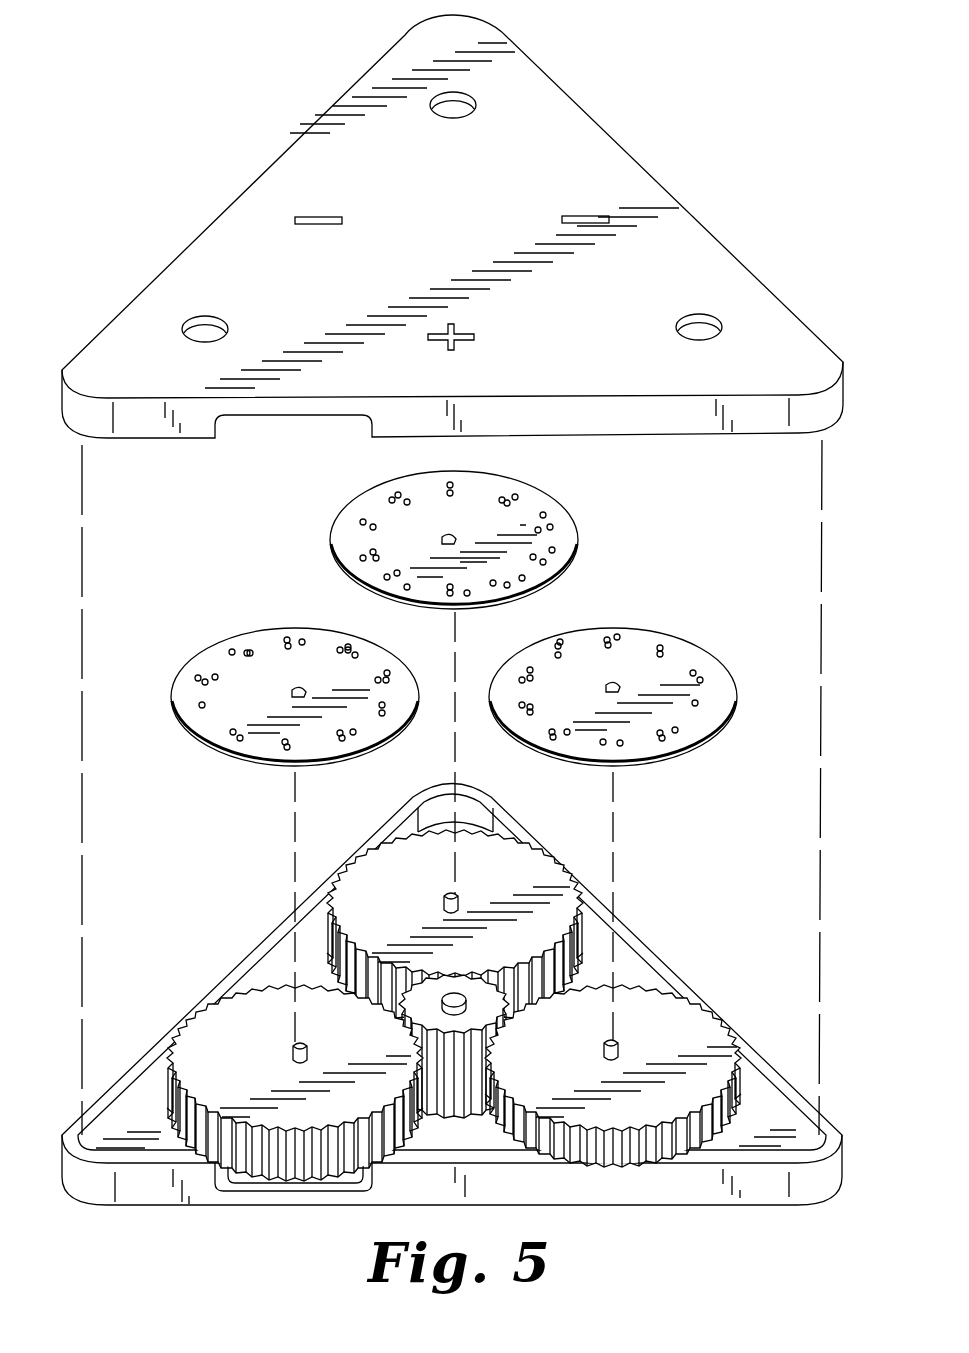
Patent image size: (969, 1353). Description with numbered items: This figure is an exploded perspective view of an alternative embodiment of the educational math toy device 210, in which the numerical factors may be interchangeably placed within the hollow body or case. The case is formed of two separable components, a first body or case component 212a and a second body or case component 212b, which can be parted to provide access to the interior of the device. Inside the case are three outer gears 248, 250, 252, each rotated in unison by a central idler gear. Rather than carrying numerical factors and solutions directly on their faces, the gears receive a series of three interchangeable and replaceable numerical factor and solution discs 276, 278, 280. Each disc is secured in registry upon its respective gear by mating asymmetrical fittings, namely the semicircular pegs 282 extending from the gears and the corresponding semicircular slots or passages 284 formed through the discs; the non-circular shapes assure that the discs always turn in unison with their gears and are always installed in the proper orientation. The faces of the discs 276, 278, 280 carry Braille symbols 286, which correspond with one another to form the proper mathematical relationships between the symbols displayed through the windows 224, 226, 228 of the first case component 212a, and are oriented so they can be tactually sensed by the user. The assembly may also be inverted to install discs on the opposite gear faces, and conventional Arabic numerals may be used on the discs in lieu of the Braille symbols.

The educational math toy device 210 is at (106, 102).
The first body or case component 212a is at (222, 213).
The second body or case component 212b is at (250, 945).
The window 224 is at (190, 318).
The window 226 is at (718, 318).
The window 228 is at (474, 98).
The outer gear 248 is at (230, 992).
The outer gear 250 is at (672, 992).
The outer gear 252 is at (568, 855).
The interchangeable numerical factor and solution disc 276 is at (202, 657).
The interchangeable numerical factor and solution disc 278 is at (706, 640).
The interchangeable numerical factor and solution disc 280 is at (556, 497).
The semicircular peg 282 is at (440, 904).
The semicircular slot or passage 284 is at (445, 540).
The Braille symbols 286 is at (348, 650).